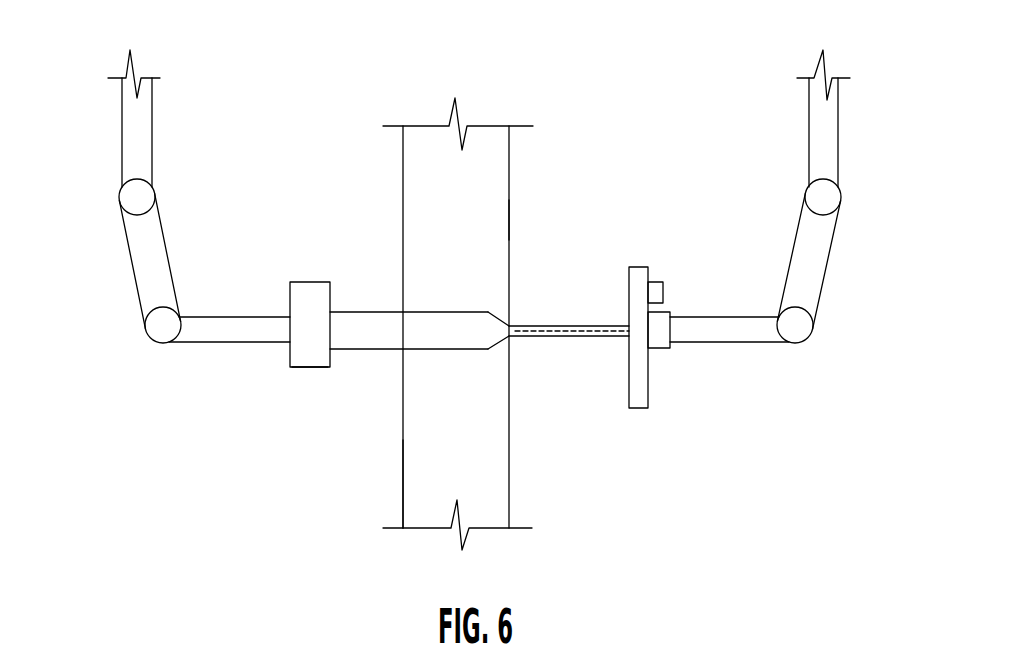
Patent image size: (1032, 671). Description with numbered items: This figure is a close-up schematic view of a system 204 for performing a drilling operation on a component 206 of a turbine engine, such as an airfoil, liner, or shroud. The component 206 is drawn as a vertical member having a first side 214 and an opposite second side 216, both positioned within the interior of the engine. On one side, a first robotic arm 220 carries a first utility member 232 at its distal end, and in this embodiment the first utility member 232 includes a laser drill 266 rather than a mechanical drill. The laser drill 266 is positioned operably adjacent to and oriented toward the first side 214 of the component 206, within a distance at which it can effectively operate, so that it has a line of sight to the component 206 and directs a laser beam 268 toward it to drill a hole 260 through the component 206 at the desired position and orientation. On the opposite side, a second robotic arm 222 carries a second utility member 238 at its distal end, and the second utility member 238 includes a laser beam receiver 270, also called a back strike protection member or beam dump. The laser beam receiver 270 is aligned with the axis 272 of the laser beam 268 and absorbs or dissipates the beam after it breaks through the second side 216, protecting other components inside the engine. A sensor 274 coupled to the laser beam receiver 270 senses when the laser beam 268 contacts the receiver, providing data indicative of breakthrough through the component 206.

The system 204 is at (688, 48).
The component 206 is at (488, 170).
The first side 214 is at (348, 483).
The second side 216 is at (512, 217).
The first robotic arm 220 is at (103, 102).
The second robotic arm 222 is at (825, 258).
The first utility member 232 is at (302, 267).
The second utility member 238 is at (671, 406).
The hole 260 is at (460, 338).
The laser drill 266 is at (313, 368).
The laser beam 268 is at (418, 322).
The laser beam receiver 270 is at (629, 407).
The axis 272 is at (548, 328).
The sensor 274 is at (666, 293).